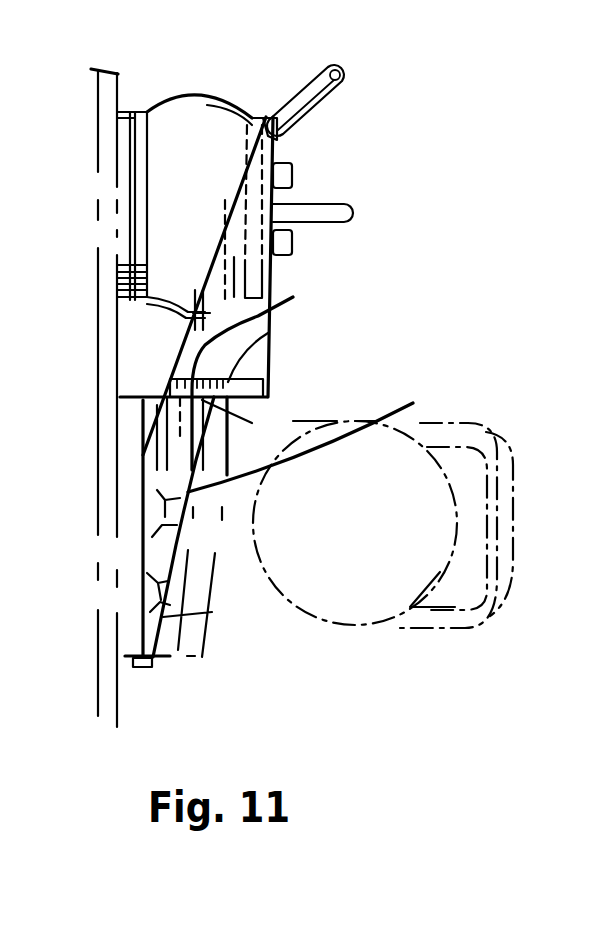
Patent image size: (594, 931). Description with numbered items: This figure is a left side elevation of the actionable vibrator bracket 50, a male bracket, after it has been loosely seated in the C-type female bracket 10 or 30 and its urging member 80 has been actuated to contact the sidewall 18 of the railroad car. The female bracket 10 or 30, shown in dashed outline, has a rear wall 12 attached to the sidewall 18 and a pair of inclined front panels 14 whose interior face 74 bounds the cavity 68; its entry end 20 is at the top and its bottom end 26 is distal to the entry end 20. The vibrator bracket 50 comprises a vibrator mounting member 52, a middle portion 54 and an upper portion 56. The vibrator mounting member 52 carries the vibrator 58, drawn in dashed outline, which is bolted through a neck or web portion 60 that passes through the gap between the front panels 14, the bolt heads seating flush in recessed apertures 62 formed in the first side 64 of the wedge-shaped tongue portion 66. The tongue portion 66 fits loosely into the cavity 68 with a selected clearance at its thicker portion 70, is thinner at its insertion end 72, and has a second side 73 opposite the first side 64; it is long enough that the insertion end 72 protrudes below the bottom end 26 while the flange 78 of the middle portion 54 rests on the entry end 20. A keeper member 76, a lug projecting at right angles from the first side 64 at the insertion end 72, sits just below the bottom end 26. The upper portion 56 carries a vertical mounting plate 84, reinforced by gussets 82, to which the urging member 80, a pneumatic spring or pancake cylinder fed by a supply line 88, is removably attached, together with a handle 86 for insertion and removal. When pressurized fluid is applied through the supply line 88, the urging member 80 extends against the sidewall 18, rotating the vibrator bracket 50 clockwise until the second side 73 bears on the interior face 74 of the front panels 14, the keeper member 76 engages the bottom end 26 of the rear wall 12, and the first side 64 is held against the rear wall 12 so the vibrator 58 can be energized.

The female bracket 10 is at (208, 632).
The female bracket 30 is at (208, 632).
The rear wall 12 is at (140, 411).
The inclined front panels 14 is at (233, 434).
The sidewall 18 is at (98, 131).
The entry end 20 is at (122, 395).
The bottom end 26 is at (108, 658).
The vibrator bracket 50 is at (280, 667).
The vibrator mounting member 52 is at (177, 548).
The middle portion 54 is at (350, 368).
The upper portion 56 is at (372, 272).
The vibrator 58 is at (440, 572).
The neck or web portion 60 is at (252, 615).
The recessed apertures 62 is at (168, 405).
The first side 64 is at (143, 550).
The tongue portion 66 is at (150, 631).
The cavity 68 is at (167, 657).
The thicker portion 70 is at (143, 487).
The insertion end 72 is at (96, 665).
The second side 73 is at (316, 441).
The interior face 74 is at (256, 376).
The keeper member 76 is at (142, 662).
The flange 78 is at (272, 330).
The urging member 80 is at (122, 113).
The gussets 82 is at (183, 333).
The vertical mounting plate 84 is at (273, 272).
The handle 86 is at (302, 90).
The supply line 88 is at (325, 203).